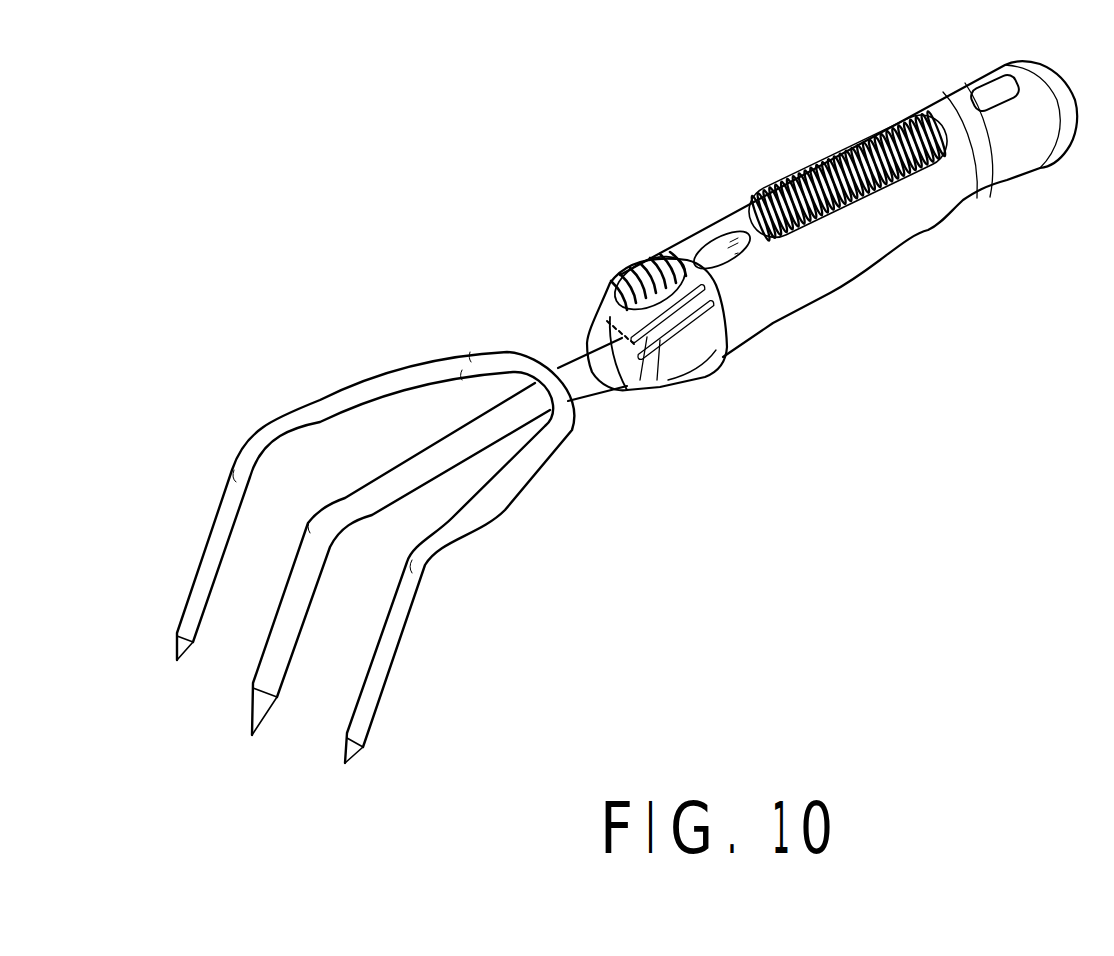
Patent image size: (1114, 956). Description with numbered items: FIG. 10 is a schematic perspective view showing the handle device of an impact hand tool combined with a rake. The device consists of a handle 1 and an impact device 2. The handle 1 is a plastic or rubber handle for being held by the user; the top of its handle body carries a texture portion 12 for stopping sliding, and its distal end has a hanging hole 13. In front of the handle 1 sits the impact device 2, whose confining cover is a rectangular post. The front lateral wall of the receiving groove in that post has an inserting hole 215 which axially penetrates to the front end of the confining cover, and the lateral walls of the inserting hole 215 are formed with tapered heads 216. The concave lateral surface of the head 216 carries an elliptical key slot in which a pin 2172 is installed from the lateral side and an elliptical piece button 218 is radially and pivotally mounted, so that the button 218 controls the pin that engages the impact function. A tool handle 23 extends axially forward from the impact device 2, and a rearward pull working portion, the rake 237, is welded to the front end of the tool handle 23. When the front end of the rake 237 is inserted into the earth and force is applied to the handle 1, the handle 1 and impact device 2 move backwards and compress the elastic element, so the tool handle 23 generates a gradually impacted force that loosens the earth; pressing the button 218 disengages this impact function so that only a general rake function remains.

The handle 1 is at (955, 260).
The texture portion 12 is at (810, 200).
The hanging hole 13 is at (975, 92).
The impact device 2 is at (680, 372).
The inserting hole 215 is at (597, 333).
The tapered head 216 is at (697, 373).
The pin 2172 is at (723, 357).
The button 218 is at (647, 262).
The tool handle 23 is at (573, 370).
The rake 237 is at (357, 383).